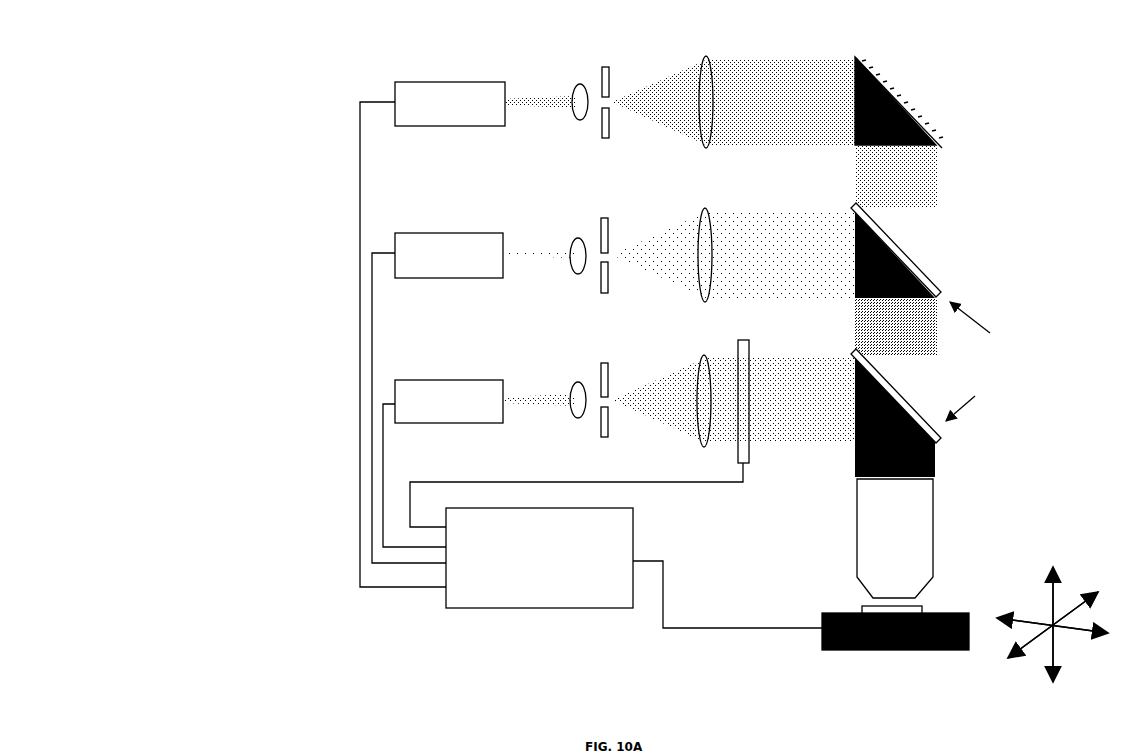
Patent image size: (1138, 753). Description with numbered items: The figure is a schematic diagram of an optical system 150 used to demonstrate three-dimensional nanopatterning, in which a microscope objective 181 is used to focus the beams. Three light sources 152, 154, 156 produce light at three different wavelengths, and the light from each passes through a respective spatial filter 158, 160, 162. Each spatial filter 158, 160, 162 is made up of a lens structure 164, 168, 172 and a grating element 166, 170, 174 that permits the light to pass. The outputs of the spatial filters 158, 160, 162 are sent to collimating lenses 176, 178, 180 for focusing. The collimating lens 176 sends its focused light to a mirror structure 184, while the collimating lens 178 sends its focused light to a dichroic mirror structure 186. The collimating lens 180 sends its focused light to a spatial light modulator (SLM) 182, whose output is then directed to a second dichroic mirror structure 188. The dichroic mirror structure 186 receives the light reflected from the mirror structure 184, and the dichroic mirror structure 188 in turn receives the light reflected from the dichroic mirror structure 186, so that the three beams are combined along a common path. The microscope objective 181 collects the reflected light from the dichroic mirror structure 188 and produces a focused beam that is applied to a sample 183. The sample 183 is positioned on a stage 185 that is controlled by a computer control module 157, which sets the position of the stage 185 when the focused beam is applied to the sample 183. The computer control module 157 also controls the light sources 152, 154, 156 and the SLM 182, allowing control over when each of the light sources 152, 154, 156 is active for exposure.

The optical system 150 is at (144, 58).
The light source 152 is at (453, 79).
The light source 154 is at (436, 238).
The light source 156 is at (470, 379).
The computer control module 157 is at (519, 607).
The spatial filter 158 is at (624, 66).
The spatial filter 160 is at (584, 204).
The spatial filter 162 is at (575, 340).
The lens structure 164 is at (576, 118).
The grating element 166 is at (602, 137).
The lens structure 168 is at (573, 242).
The grating element 170 is at (614, 236).
The lens structure 172 is at (572, 378).
The grating element 174 is at (612, 374).
The collimating lens 176 is at (723, 92).
The collimating lens 178 is at (713, 230).
The collimating lens 180 is at (710, 354).
The microscope objective 181 is at (929, 511).
The spatial light modulator (SLM) 182 is at (752, 346).
The sample 183 is at (857, 603).
The mirror structure 184 is at (909, 102).
The stage 185 is at (814, 616).
The dichroic mirror structure 186 is at (918, 266).
The dichroic mirror structure 188 is at (903, 386).